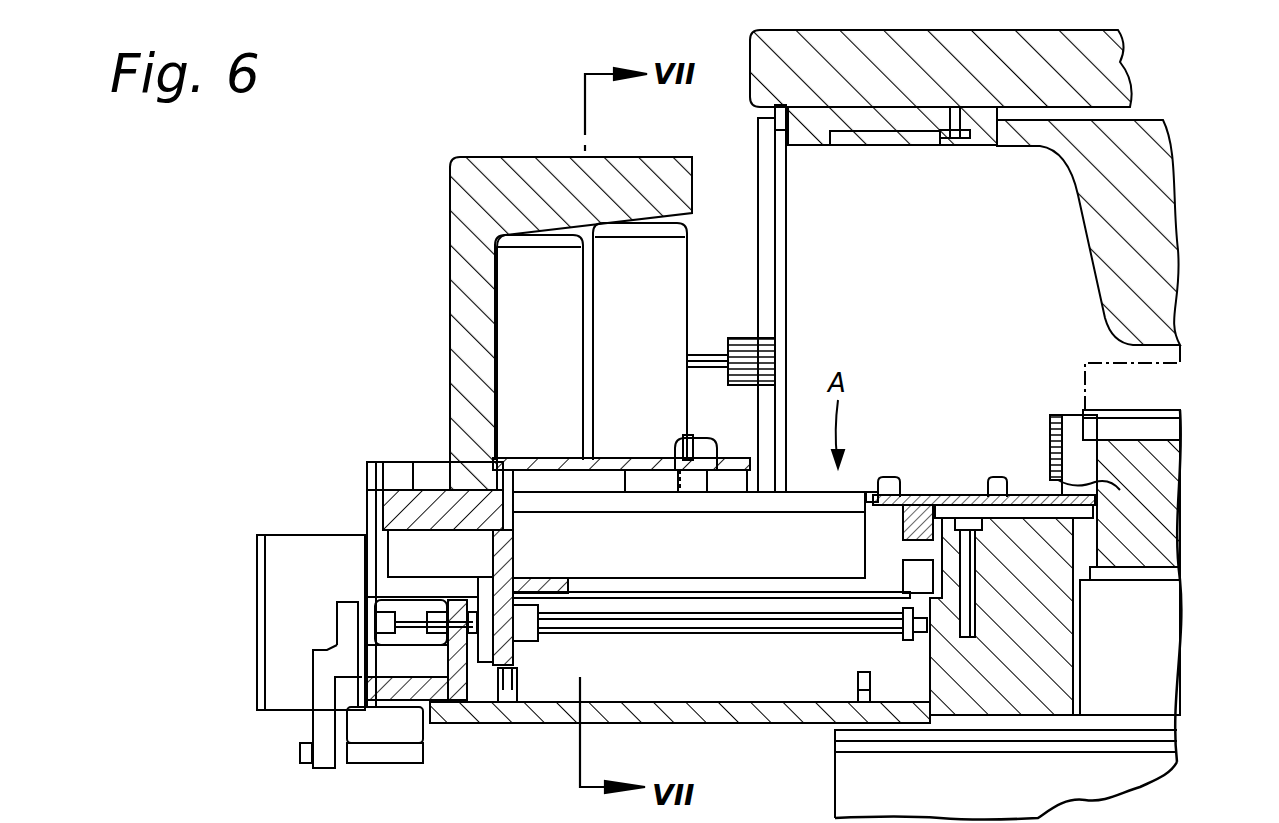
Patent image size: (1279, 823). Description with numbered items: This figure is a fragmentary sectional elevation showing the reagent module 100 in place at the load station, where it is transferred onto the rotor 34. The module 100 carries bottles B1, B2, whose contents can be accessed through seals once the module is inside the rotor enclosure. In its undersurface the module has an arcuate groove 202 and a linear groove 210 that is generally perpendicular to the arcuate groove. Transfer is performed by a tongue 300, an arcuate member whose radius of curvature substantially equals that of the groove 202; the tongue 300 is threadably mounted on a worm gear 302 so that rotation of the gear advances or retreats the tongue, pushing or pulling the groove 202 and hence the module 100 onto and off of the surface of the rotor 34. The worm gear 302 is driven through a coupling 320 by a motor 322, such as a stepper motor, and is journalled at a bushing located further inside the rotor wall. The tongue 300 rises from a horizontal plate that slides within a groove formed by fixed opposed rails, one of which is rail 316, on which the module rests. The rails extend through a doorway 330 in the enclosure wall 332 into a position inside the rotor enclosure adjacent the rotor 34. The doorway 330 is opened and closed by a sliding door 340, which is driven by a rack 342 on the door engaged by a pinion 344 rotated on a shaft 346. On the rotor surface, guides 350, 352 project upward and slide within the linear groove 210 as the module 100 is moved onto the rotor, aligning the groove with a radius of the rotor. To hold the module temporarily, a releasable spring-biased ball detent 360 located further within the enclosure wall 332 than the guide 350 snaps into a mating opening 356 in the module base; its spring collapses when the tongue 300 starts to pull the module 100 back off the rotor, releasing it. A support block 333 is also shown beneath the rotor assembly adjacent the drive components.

The reagent module 100 is at (424, 268).
The arcuate groove 202 is at (512, 470).
The linear groove 210 is at (625, 485).
The tongue 300 is at (520, 480).
The worm gear 302 is at (652, 615).
The rail 316 is at (732, 492).
The coupling 320 is at (413, 637).
The motor 322 is at (300, 556).
The doorway 330 is at (790, 268).
The enclosure wall 332 is at (800, 186).
The support block 333 is at (945, 660).
The sliding door 340 is at (772, 299).
The rack 342 is at (750, 343).
The pinion 344 is at (738, 375).
The shaft 346 is at (705, 357).
The guide 350 is at (997, 477).
The guide 352 is at (885, 477).
The mating opening 356 is at (678, 490).
The spring-biased ball detent 360 is at (1135, 490).
The rotor 34 is at (940, 495).
The bottle B1 is at (645, 382).
The bottle B2 is at (556, 382).